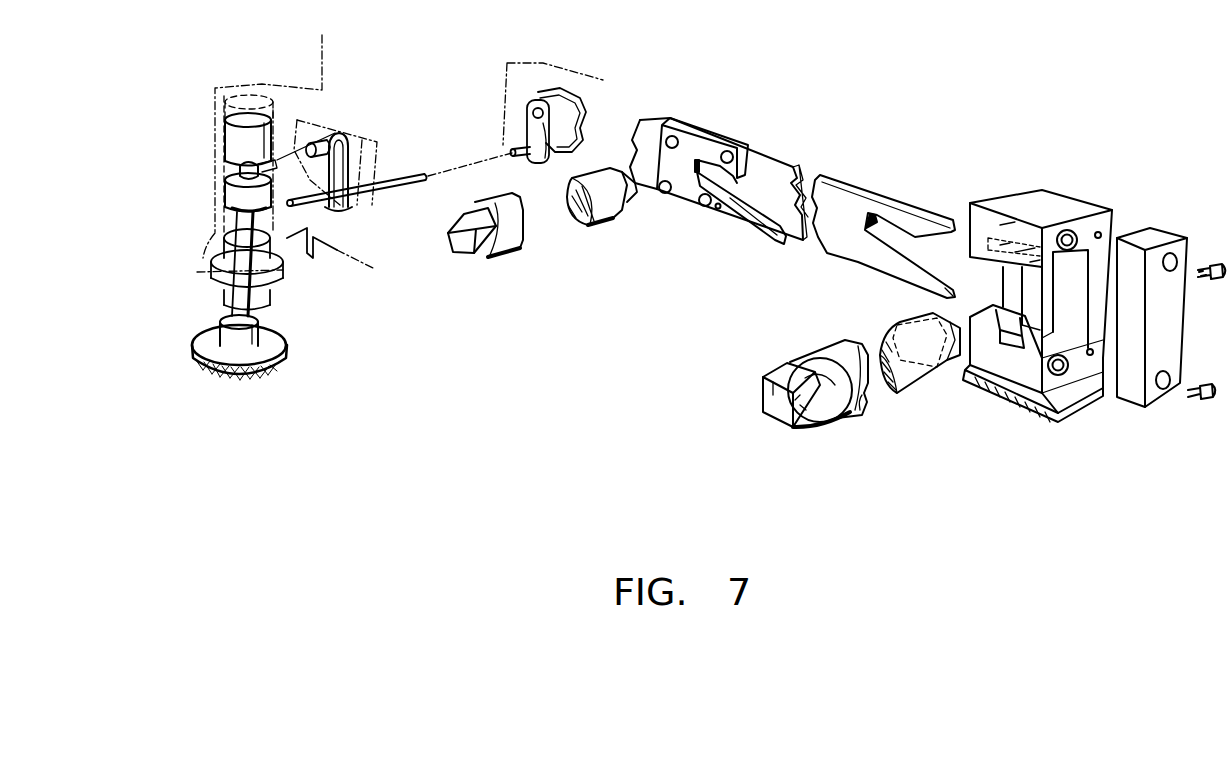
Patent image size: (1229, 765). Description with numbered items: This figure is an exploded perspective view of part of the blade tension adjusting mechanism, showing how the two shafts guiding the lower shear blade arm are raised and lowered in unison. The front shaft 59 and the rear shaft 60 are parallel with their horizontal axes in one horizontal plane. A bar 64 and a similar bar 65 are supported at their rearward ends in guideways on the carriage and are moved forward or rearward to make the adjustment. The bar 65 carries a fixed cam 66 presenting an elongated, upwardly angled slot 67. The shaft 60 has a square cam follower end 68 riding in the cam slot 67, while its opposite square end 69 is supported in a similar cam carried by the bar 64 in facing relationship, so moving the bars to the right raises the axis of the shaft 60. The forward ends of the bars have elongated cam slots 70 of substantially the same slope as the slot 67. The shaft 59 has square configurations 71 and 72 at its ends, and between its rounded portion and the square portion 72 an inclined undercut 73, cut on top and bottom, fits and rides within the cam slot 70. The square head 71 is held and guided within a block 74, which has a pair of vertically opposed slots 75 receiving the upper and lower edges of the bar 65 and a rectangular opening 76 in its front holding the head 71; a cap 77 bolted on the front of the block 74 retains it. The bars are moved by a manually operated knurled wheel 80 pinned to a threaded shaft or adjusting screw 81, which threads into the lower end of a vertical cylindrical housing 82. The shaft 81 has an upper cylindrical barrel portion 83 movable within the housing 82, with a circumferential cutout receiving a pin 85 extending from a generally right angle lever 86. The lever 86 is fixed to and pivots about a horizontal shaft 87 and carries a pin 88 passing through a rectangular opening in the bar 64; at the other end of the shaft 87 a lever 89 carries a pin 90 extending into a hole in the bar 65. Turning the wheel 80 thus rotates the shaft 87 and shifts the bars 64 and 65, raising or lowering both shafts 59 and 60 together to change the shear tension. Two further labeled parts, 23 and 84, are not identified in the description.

The base plate 23 is at (973, 382).
The front shaft 59 is at (835, 353).
The shaft 60 is at (612, 205).
The bar 64 is at (370, 173).
The bar 65 is at (758, 178).
The cam 66 is at (713, 150).
The slot 67 is at (723, 190).
The square cam follower end 68 is at (636, 204).
The square end 69 is at (473, 253).
The cam slot 70 is at (883, 230).
The square end 71 is at (950, 367).
The square portion 72 is at (782, 412).
The inclined undercut 73 is at (832, 418).
The block 74 is at (1083, 203).
The vertically opposed slots 75 is at (1012, 217).
The rectangular opening 76 is at (1073, 303).
The cap 77 is at (1155, 232).
The knurled wheel 80 is at (262, 354).
The threaded shaft 81 is at (246, 302).
The vertical cylindrical housing 82 is at (212, 173).
The upper cylindrical barrel portion 83 is at (230, 152).
The lower cylinder 84 is at (230, 190).
The pin 85 is at (272, 152).
The right angle lever 86 is at (340, 198).
The horizontal shaft 87 is at (387, 184).
The pin 88 is at (320, 143).
The lever 89 is at (565, 120).
The pin 90 is at (548, 100).